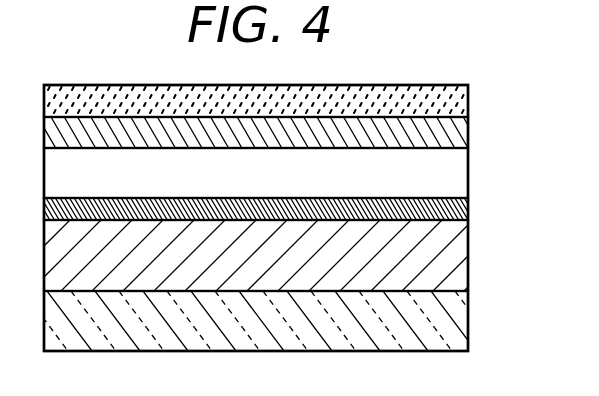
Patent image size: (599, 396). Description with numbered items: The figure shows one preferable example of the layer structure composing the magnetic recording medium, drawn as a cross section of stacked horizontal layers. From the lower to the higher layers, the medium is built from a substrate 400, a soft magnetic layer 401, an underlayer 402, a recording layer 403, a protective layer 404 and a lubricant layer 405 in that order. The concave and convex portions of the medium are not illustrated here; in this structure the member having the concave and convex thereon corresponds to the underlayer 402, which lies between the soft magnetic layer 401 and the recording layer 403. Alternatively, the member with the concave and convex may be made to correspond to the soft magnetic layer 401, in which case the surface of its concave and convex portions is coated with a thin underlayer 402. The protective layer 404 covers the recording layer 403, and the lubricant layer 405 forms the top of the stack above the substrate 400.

The substrate 400 is at (450, 317).
The soft magnetic layer 401 is at (453, 252).
The underlayer 402 is at (455, 207).
The recording layer 403 is at (455, 171).
The protective layer 404 is at (455, 129).
The lubricant layer 405 is at (455, 98).